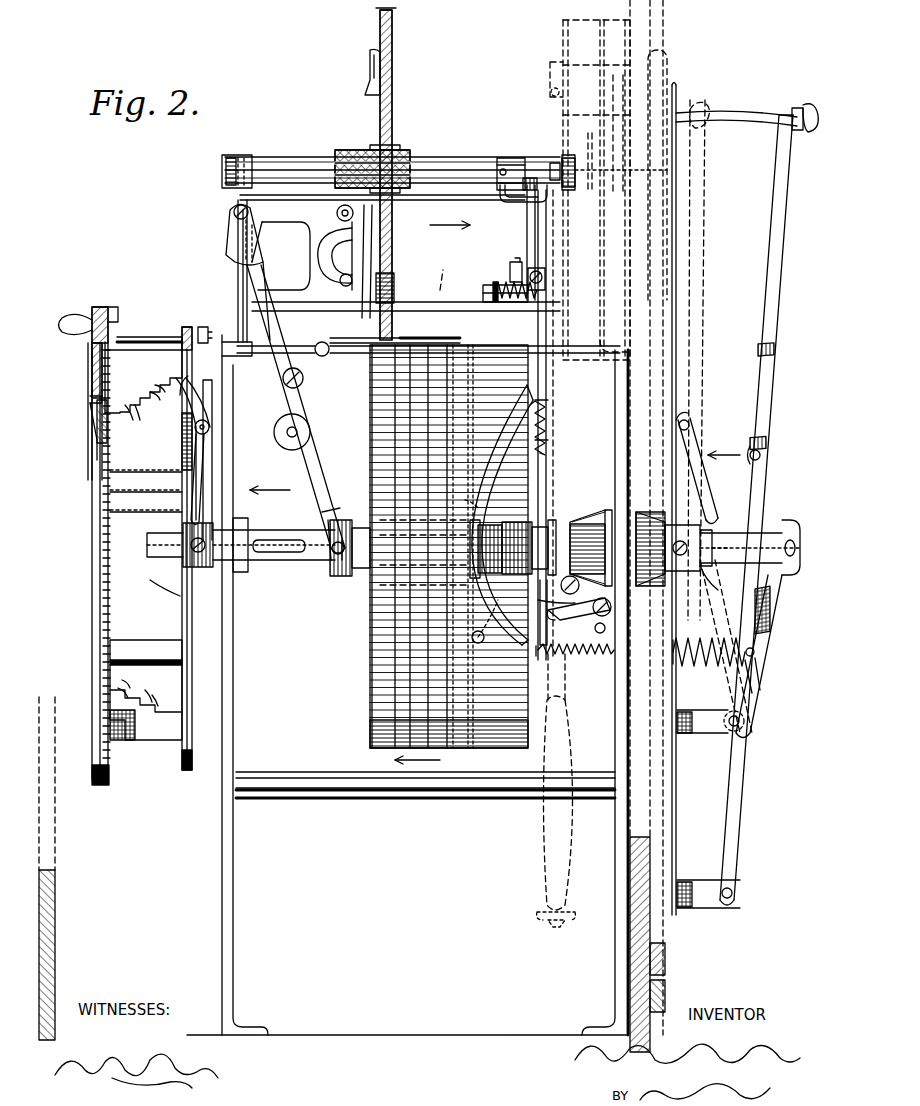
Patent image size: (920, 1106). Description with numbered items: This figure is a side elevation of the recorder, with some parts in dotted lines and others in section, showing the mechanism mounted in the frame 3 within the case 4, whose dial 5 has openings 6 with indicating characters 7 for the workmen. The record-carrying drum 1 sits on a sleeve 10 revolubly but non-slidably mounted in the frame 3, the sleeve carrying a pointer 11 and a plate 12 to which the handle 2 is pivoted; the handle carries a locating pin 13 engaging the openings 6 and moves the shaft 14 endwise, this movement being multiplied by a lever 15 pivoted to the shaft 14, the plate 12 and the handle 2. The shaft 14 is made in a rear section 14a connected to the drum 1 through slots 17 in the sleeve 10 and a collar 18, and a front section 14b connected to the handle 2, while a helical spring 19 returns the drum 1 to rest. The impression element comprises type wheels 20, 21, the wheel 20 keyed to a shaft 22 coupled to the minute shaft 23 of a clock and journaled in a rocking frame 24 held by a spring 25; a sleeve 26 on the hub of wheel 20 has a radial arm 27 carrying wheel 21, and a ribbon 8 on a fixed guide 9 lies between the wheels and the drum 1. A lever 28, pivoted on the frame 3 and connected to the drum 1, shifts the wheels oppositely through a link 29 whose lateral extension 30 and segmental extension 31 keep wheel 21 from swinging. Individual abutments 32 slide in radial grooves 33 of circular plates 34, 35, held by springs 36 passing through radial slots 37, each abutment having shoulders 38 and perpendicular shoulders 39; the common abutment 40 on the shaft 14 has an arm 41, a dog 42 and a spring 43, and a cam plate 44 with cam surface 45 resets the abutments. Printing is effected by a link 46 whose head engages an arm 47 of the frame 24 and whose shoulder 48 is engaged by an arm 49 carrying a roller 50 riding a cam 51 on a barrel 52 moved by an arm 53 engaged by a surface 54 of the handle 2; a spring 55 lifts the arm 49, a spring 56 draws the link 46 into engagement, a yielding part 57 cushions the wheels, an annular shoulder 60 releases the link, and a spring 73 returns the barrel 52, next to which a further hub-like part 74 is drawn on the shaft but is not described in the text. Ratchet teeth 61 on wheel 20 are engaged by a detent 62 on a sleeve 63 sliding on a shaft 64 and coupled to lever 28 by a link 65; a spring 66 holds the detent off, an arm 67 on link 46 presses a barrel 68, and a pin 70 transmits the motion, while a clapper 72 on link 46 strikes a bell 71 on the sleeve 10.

The drum 1 is at (370, 672).
The handle 2 is at (780, 385).
The frame 3 is at (240, 900).
The case 4 is at (650, 928).
The dial 5 is at (667, 60).
The openings 6 is at (665, 975).
The indicating characters 7 is at (669, 517).
The ribbon 8 is at (430, 338).
The fixed guide 9 is at (340, 360).
The sleeve 10 is at (280, 530).
The pointer 11 is at (700, 310).
The plate 12 is at (677, 812).
The locating pin 13 is at (742, 110).
The shaft 14 is at (147, 548).
The rear section of shaft 14a is at (159, 581).
The front section of shaft 14b is at (800, 582).
The lever 15 is at (770, 600).
The slots 17 is at (292, 570).
The collar 18 is at (342, 576).
The helical spring 19 is at (697, 665).
The type wheel 20 is at (378, 28).
The type wheel 21 is at (360, 320).
The shaft 22 is at (440, 165).
The minute shaft 23 is at (598, 185).
The frame 24 is at (245, 157).
The spring 25 is at (528, 234).
The sleeve 26 is at (355, 148).
The radial arm 27 is at (350, 272).
The lever 28 is at (305, 420).
The link 29 is at (283, 215).
The lateral extension 30 is at (330, 290).
The segmental extension 31 is at (228, 250).
The individual abutments 32 is at (150, 500).
The radial grooves 33 is at (118, 310).
The rear plate 34 is at (98, 785).
The circular plate 35 is at (186, 770).
The springs 36 is at (90, 410).
The radial slots 37 is at (98, 375).
The shoulders 38 is at (144, 555).
The shoulders 39 is at (155, 388).
The common abutment 40 is at (210, 435).
The arm 41 is at (205, 488).
The dog 42 is at (190, 395).
The spring 43 is at (190, 465).
The cam plate 44 is at (93, 363).
The cam surface 45 is at (90, 398).
The link 46 is at (548, 385).
The arm 47 is at (516, 202).
The shoulder 48 is at (540, 620).
The arm 49 is at (565, 620).
The roller 50 is at (580, 590).
The cam 51 is at (592, 510).
The barrel 52 is at (702, 562).
The arm 53 is at (698, 450).
The surface 54 is at (760, 453).
The spring 55 is at (600, 655).
The spring 56 is at (560, 660).
The yielding part 57 is at (548, 420).
The annular shoulder 60 is at (566, 515).
The ratchet teeth 61 is at (392, 95).
The detent 62 is at (396, 285).
The sleeve 63 is at (282, 310).
The shaft 64 is at (470, 310).
The link 65 is at (240, 296).
The spring 66 is at (510, 270).
The arm 67 is at (545, 280).
The barrel 68 is at (480, 285).
The pin 70 is at (447, 268).
The bell 71 is at (498, 498).
The clapper 72 is at (472, 639).
The spring 73 is at (500, 578).
The cone 74 is at (650, 512).